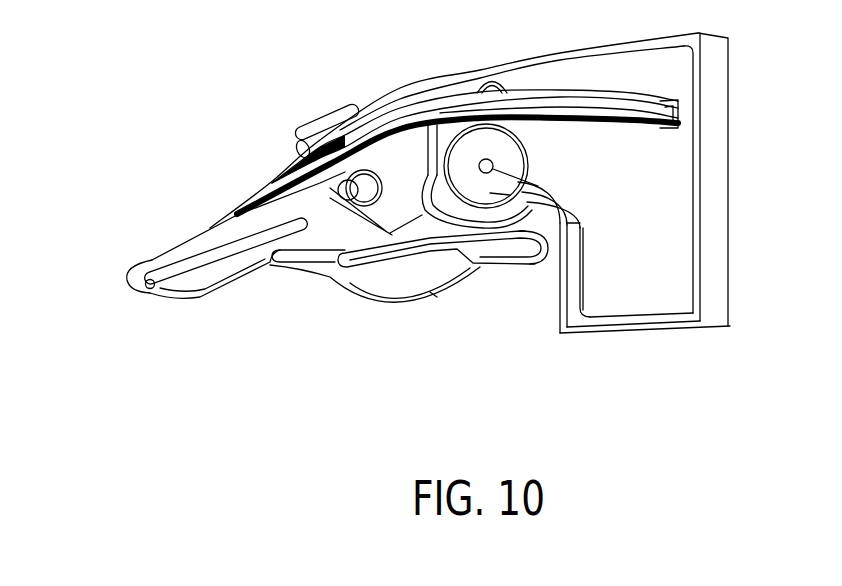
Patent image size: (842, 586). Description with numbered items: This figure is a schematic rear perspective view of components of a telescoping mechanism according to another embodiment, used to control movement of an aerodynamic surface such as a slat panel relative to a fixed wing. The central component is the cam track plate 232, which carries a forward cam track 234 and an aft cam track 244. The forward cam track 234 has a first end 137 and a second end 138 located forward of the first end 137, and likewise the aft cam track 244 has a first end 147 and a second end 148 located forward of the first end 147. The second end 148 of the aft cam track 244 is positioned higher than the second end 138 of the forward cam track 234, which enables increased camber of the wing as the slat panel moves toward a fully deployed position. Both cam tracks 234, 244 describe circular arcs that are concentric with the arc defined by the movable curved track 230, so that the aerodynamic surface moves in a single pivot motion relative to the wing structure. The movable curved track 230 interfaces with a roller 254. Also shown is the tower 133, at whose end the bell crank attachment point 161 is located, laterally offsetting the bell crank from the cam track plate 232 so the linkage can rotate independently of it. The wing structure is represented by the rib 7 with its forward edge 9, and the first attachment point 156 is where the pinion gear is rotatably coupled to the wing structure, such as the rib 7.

The rib 7 is at (678, 202).
The forward edge 9 is at (563, 262).
The tower 133 is at (364, 185).
The first end 137 is at (323, 257).
The second end 138 is at (98, 260).
The first end 147 is at (535, 280).
The second end 148 is at (358, 273).
The first attachment point 156 is at (578, 204).
The bell crank attachment point 161 is at (298, 152).
The movable curved track 230 is at (547, 103).
The cam track plate 232 is at (263, 197).
The forward cam track 234 is at (180, 250).
The aft cam track 244 is at (487, 267).
The roller 254 is at (563, 262).